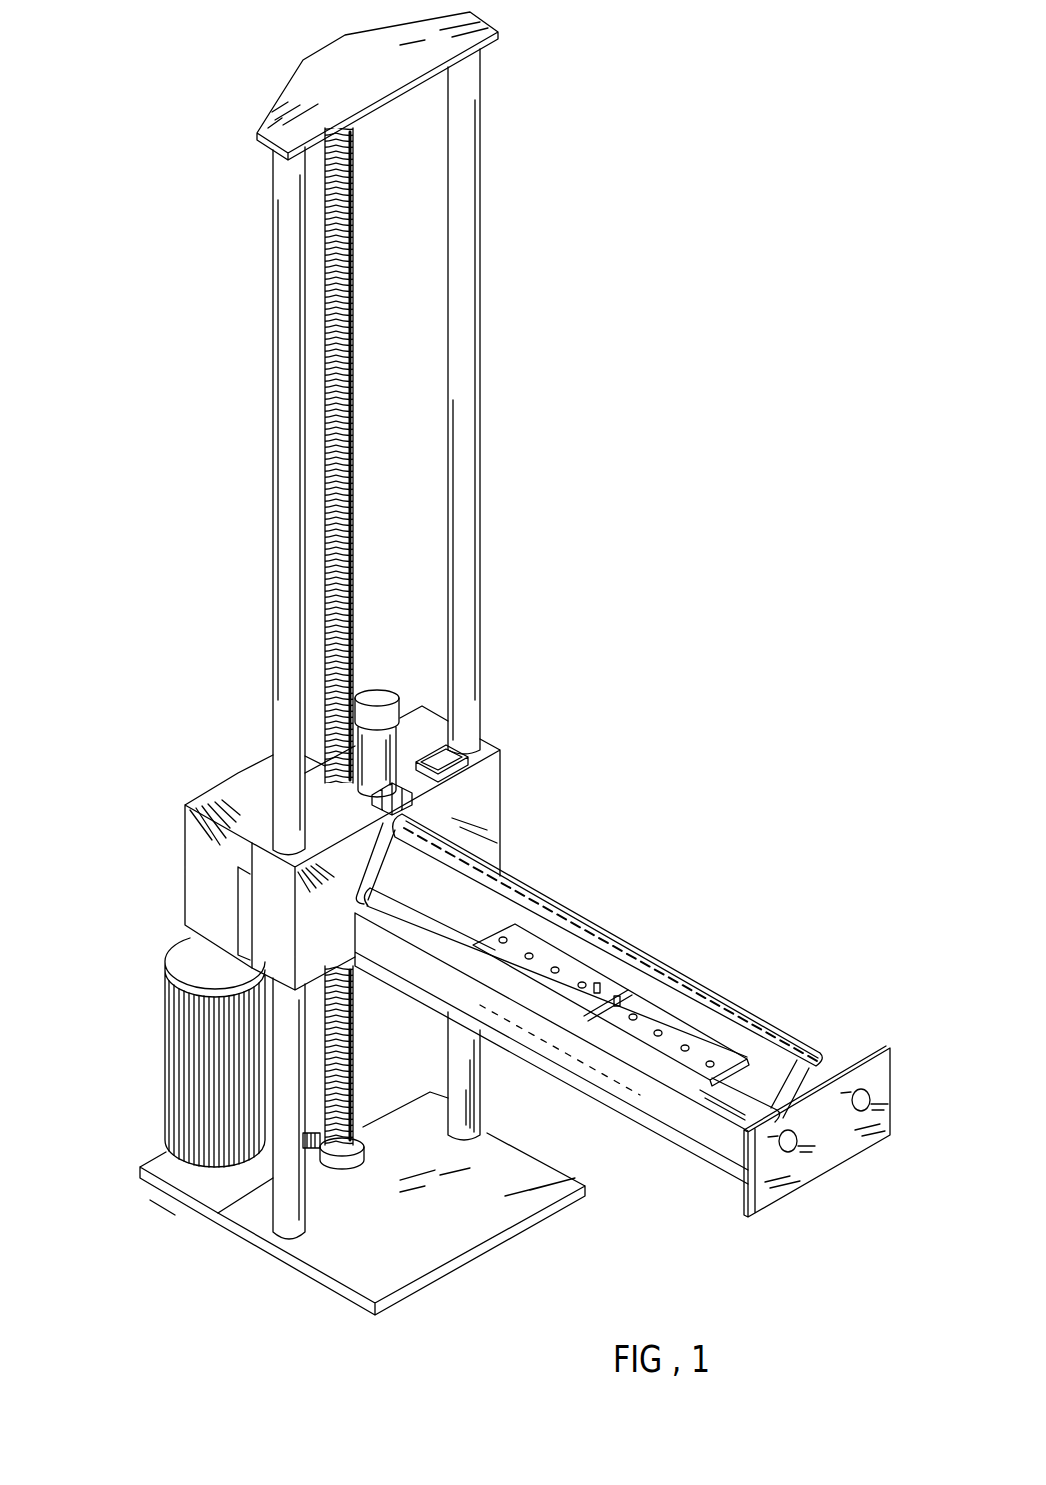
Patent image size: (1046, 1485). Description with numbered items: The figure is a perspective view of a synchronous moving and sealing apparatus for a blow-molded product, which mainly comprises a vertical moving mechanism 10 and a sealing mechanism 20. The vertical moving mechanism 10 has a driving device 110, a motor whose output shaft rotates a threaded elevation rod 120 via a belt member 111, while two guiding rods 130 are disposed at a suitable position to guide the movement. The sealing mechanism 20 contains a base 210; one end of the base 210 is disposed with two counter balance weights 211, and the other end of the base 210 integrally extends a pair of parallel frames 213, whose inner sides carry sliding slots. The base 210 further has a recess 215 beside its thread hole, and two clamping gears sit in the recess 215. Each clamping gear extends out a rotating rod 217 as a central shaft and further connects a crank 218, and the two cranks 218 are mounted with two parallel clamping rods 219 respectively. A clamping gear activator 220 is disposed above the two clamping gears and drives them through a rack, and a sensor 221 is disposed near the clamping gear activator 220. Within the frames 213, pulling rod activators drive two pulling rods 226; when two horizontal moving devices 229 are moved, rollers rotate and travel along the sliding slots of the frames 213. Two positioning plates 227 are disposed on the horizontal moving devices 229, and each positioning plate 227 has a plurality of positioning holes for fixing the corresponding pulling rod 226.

The vertical moving mechanism 10 is at (142, 1115).
The sealing mechanism 20 is at (618, 897).
The driving device 110 is at (188, 1052).
The belt member 111 is at (322, 1160).
The elevation rod 120 is at (356, 450).
The guiding rods 130 is at (287, 440).
The base 210 is at (488, 817).
The counter balance weights 211 is at (192, 858).
The parallel frames 213 is at (652, 1128).
The recess 215 is at (413, 768).
The rotating rod 217 is at (730, 1105).
The crank 218 is at (842, 1057).
The clamping rods 219 is at (777, 1030).
The clamping gear activator 220 is at (371, 690).
The sensor 221 is at (421, 746).
The pulling rods 226 is at (621, 1003).
The positioning plates 227 is at (680, 1030).
The horizontal moving devices 229 is at (508, 900).